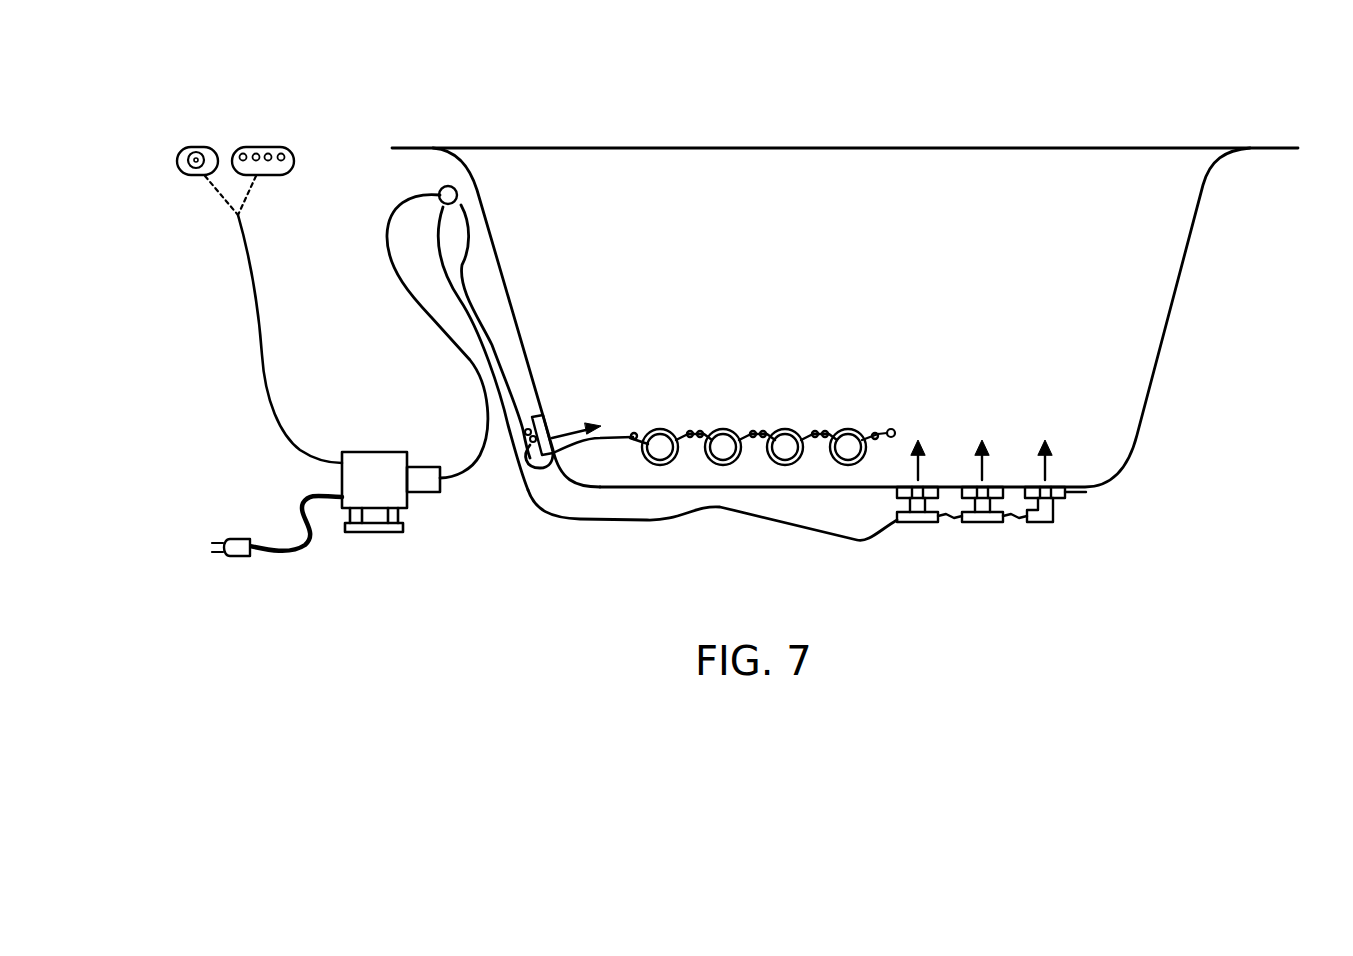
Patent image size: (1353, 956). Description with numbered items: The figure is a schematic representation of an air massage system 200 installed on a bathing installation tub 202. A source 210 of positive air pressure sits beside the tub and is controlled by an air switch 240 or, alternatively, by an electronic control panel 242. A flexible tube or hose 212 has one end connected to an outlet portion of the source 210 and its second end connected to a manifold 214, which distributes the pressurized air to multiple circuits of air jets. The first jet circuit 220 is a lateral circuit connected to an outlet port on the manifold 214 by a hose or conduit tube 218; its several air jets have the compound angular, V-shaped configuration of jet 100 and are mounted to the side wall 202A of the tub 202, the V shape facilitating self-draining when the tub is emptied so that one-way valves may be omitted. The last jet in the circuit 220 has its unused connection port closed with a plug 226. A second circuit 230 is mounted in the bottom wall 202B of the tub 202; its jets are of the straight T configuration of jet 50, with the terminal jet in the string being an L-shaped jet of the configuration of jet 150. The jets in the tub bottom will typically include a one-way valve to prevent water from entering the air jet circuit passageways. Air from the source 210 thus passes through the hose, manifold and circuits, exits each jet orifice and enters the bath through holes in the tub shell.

The air massage system 200 is at (170, 400).
The bathing installation tub 202 is at (468, 164).
The side wall 202A is at (522, 336).
The bottom wall 202B is at (790, 488).
The source 210 is at (365, 452).
The flexible tube or hose 212 is at (433, 318).
The manifold 214 is at (439, 189).
The hose or conduit tube 218 is at (486, 300).
The jet 100 is at (546, 420).
The plug 226 is at (892, 428).
The first jet circuit 220 is at (922, 418).
The jet 50 is at (917, 523).
The jet 150 is at (1066, 492).
The second circuit 230 is at (1097, 518).
The air switch 240 is at (194, 155).
The electronic control panel 242 is at (283, 146).